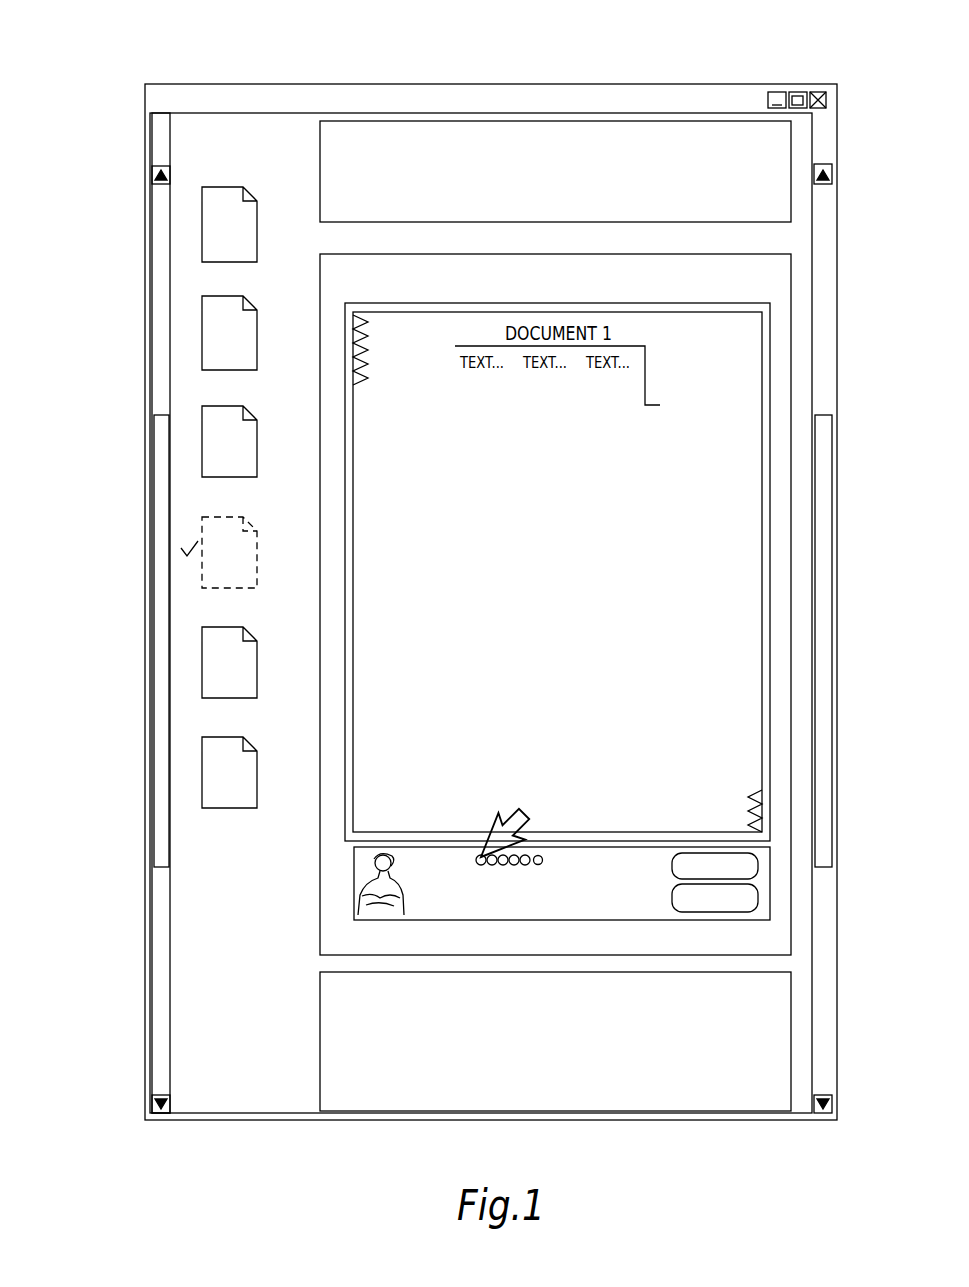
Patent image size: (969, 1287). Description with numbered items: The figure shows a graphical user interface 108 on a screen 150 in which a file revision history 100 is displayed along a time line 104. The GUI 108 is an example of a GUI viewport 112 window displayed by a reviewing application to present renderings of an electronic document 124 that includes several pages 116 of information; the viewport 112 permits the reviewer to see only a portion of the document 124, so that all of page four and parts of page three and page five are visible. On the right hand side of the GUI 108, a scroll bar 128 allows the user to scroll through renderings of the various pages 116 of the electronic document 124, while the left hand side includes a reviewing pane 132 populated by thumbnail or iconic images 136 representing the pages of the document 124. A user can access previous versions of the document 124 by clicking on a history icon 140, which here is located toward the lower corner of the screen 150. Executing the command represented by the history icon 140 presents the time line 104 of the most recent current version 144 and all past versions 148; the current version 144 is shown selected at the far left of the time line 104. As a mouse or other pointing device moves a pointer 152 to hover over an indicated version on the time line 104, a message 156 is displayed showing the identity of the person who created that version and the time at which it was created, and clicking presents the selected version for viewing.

The screen 150 is at (793, 42).
The graphical user interface 108 is at (832, 366).
The reviewing pane 132 is at (188, 198).
The GUI viewport 112 is at (807, 908).
The scroll bar 128 is at (823, 480).
The pages 116 is at (775, 208).
The electronic document 124 is at (182, 545).
The thumbnail or iconic images 136 is at (210, 243).
The time line 104 is at (571, 847).
The history icon 140 is at (355, 893).
The current version 144 is at (479, 855).
The pointer 152 is at (512, 818).
The past versions 148 is at (422, 918).
The message 156 is at (595, 907).
The file revision history 100 is at (678, 920).